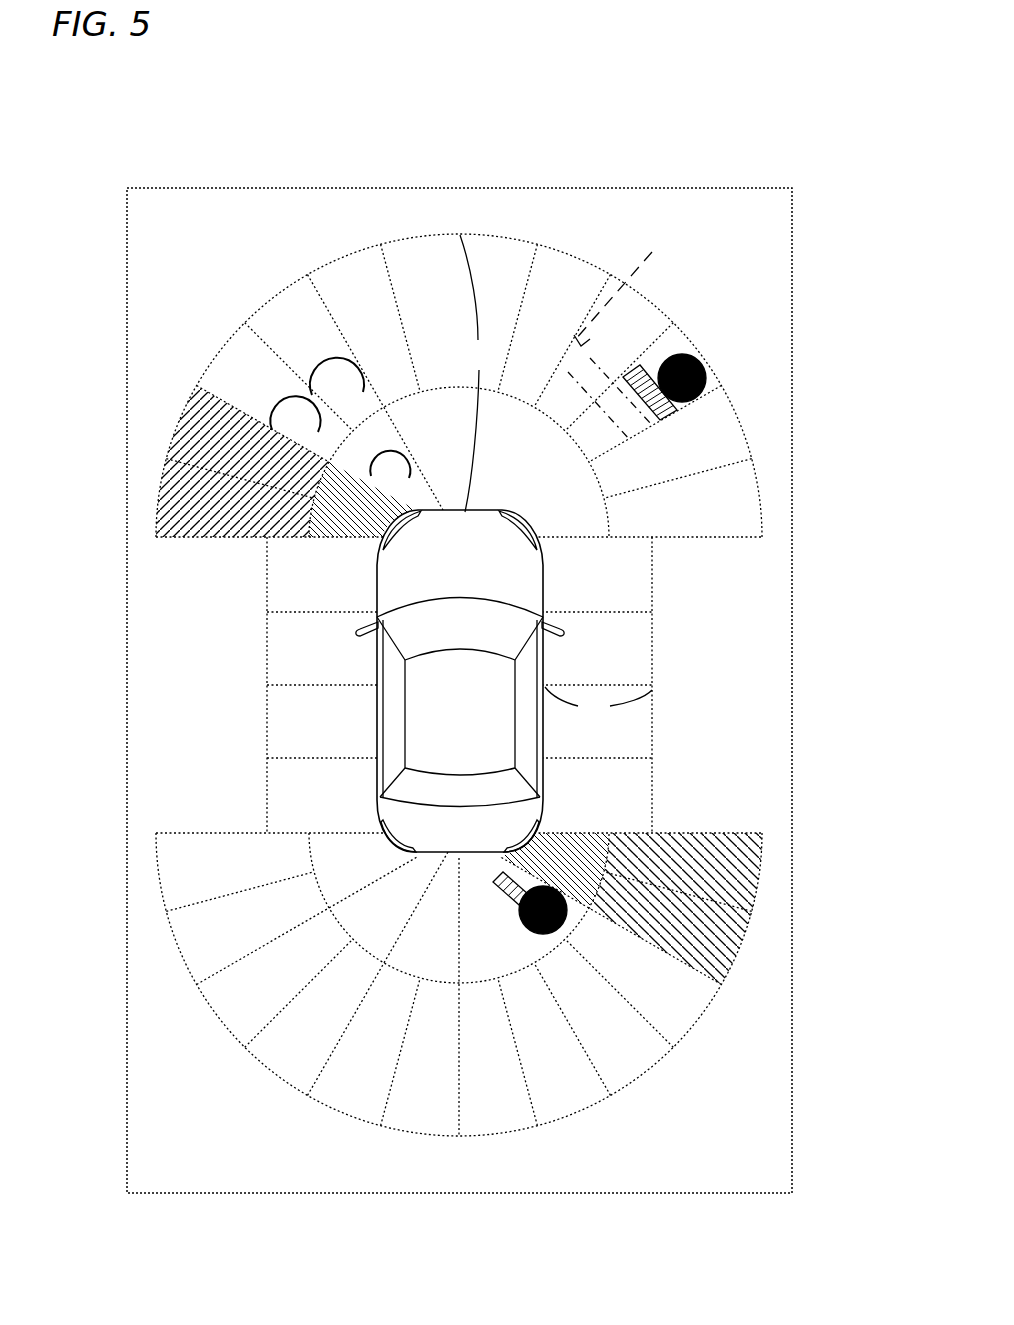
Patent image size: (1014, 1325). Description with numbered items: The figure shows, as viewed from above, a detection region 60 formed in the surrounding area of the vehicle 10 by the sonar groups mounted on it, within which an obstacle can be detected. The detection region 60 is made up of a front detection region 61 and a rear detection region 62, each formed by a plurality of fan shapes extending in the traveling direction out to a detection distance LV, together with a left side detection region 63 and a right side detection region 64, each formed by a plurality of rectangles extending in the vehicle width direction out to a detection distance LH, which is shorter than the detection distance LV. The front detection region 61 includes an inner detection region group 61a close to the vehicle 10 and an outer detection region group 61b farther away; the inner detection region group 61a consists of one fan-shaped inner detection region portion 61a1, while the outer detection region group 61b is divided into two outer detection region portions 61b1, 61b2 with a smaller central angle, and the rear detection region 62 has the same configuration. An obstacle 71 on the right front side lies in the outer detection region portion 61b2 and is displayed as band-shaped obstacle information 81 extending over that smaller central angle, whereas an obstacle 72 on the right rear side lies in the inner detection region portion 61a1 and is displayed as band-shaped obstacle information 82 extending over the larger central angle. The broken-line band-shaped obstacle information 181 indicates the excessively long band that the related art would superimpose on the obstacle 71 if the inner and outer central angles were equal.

The vehicle 10 is at (418, 730).
The detection region 60 is at (653, 213).
The front detection region 61 is at (420, 230).
The inner detection region group 61a is at (290, 545).
The inner detection region portion 61a1 is at (378, 432).
The outer detection region group 61b is at (210, 537).
The outer detection region portion 61b1 is at (500, 268).
The outer detection region portion 61b2 is at (575, 286).
The rear detection region 62 is at (407, 1137).
The left side detection region 63 is at (265, 657).
The right side detection region 64 is at (652, 637).
The obstacle 71 is at (707, 378).
The obstacle 72 is at (548, 934).
The band-shaped obstacle information 81 is at (640, 366).
The band-shaped obstacle information 82 is at (508, 902).
The band-shaped obstacle information 181 is at (619, 333).
The detection distance LV is at (475, 373).
The detection distance LH is at (598, 703).